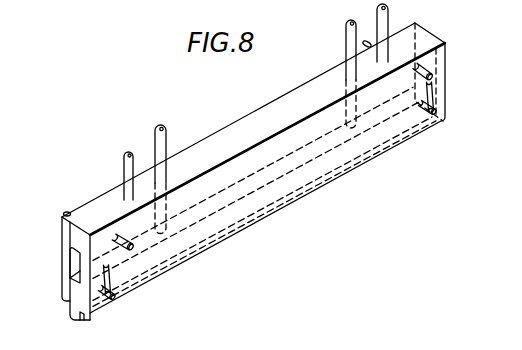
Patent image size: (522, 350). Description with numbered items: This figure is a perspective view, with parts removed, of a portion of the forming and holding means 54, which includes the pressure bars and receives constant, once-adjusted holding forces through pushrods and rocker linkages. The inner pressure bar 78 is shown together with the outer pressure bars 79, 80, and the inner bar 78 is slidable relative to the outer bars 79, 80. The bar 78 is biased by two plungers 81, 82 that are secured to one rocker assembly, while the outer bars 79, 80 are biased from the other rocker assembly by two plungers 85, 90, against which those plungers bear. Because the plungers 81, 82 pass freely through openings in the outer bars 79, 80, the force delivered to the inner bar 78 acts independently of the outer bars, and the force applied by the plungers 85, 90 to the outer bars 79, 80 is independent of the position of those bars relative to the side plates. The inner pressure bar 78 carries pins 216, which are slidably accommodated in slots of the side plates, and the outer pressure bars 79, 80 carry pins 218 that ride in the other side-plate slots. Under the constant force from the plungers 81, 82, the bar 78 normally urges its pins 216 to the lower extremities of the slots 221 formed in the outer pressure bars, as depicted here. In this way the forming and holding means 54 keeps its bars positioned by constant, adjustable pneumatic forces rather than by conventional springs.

The forming and holding means 54 is at (261, 105).
The inner pressure bar 78 is at (74, 300).
The outer pressure bar 79 is at (64, 237).
The outer pressure bar 80 is at (291, 180).
The plunger 81 is at (168, 140).
The plunger 82 is at (346, 39).
The plunger 85 is at (124, 163).
The plunger 90 is at (388, 15).
The pin 216 is at (114, 298).
The pin 218 is at (65, 210).
The slot 221 is at (111, 281).